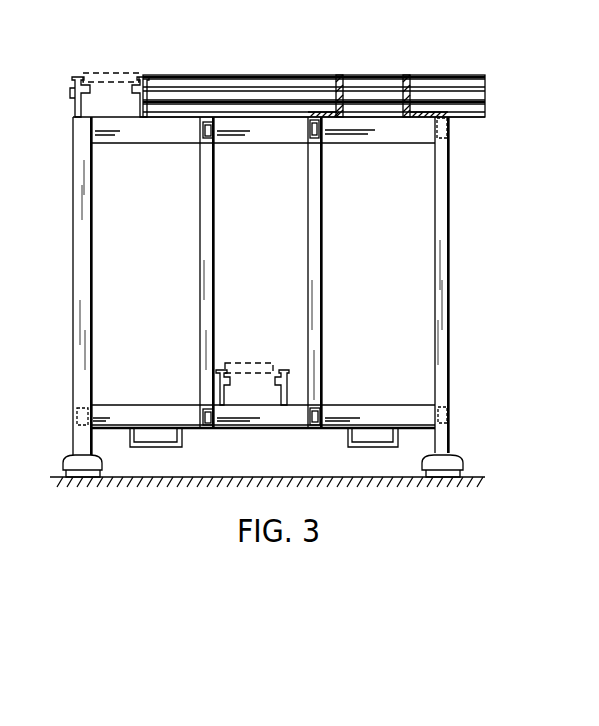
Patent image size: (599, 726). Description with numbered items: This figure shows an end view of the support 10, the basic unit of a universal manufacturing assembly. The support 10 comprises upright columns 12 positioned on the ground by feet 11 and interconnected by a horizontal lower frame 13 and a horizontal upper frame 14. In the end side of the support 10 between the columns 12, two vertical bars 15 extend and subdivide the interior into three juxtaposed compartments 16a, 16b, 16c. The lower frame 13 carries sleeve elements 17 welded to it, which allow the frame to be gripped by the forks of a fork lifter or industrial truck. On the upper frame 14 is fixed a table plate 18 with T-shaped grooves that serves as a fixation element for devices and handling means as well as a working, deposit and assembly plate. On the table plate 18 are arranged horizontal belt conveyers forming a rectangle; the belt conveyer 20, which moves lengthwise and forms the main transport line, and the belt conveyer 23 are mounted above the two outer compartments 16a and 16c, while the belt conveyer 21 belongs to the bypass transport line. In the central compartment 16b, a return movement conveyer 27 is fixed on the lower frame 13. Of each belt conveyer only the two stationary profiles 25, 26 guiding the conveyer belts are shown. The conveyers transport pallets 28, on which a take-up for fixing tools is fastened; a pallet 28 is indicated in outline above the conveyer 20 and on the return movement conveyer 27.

The support 10 is at (458, 232).
The feet 11 is at (104, 471).
The upright columns 12 is at (80, 295).
The lower frame 13 is at (330, 410).
The upper frame 14 is at (352, 137).
The vertical bars 15 is at (210, 285).
The compartment 16a is at (132, 315).
The central compartment 16b is at (243, 313).
The compartment 16c is at (374, 316).
The sleeve elements 17 is at (182, 442).
The table plate 18 is at (452, 116).
The belt conveyer 20 is at (192, 208).
The belt conveyer 21 is at (261, 75).
The belt conveyer 23 is at (410, 74).
The stationary profile 25 is at (74, 99).
The stationary profile 26 is at (143, 105).
The return movement conveyer 27 is at (273, 361).
The pallets 28 is at (105, 71).